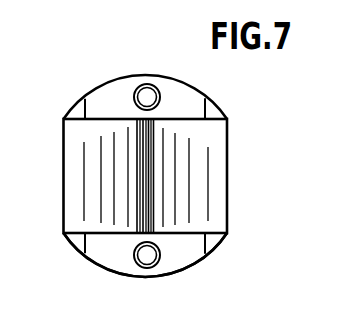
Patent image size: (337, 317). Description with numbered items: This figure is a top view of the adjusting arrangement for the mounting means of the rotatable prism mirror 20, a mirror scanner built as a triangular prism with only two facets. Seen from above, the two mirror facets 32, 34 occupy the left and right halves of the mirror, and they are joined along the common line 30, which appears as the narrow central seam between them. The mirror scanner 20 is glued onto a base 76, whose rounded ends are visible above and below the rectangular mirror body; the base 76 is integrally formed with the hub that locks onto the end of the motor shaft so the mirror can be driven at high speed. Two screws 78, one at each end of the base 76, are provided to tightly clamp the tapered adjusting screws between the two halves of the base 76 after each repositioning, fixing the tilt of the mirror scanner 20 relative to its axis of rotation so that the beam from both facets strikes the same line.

The rotatable prism mirror 20 is at (247, 155).
The common line 30 is at (142, 218).
The mirror facet 32 is at (210, 207).
The mirror facet 34 is at (73, 191).
The base 76 is at (137, 278).
The screws 78 is at (158, 87).